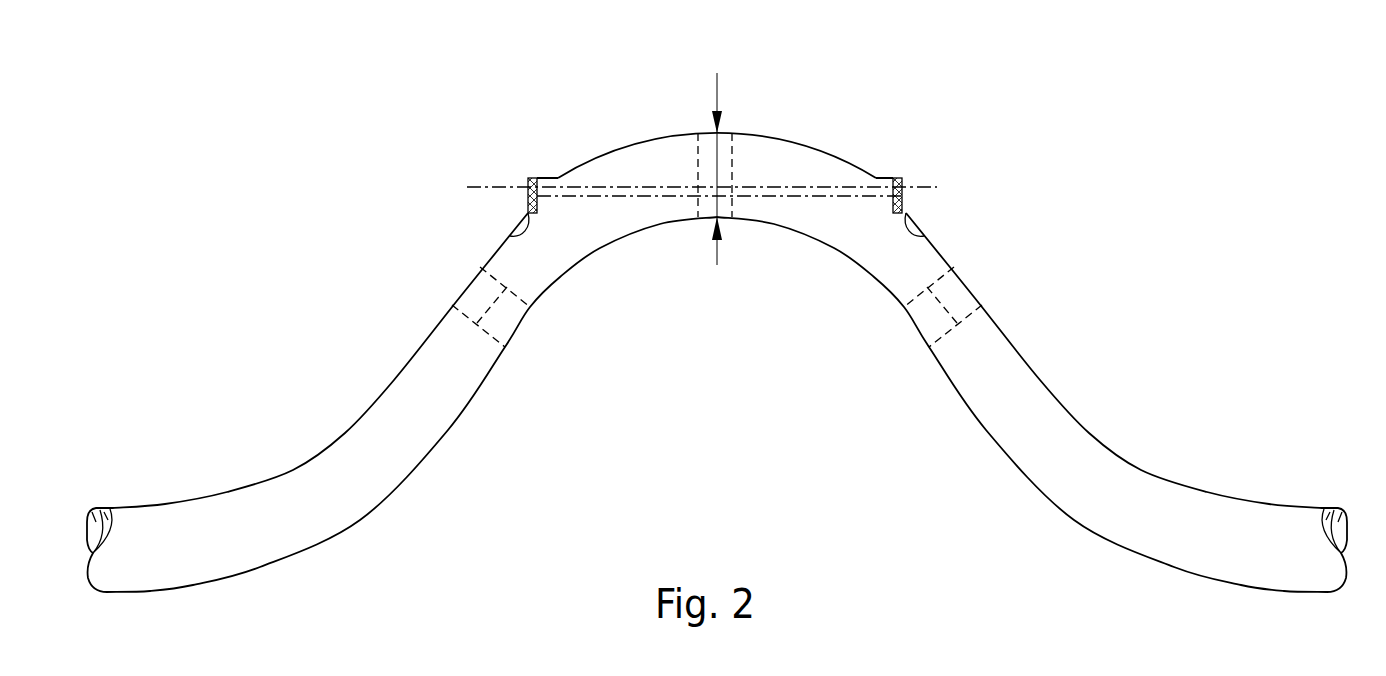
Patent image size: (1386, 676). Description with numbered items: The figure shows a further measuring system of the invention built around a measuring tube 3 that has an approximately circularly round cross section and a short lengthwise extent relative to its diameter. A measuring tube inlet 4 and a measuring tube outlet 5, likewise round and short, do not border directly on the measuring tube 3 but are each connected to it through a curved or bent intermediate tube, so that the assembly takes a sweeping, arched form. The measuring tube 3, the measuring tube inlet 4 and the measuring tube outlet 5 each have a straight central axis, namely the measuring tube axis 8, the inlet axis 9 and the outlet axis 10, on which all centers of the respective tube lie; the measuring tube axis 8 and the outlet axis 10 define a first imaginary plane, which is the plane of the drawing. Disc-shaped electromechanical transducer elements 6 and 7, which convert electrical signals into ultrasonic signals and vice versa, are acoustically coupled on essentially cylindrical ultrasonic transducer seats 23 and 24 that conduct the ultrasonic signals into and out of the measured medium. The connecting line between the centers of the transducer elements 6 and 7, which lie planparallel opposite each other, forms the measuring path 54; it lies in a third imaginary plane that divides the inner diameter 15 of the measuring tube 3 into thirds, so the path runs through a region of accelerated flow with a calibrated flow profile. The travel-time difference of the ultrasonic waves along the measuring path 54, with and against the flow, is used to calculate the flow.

The measuring tube 3 is at (720, 132).
The measuring tube inlet 4 is at (463, 283).
The measuring tube outlet 5 is at (972, 288).
The electromechanical transducer element 6 is at (532, 178).
The electromechanical transducer element 7 is at (898, 178).
The measuring tube axis 8 is at (480, 187).
The measuring tube inlet axis 9 is at (475, 332).
The measuring tube outlet axis 10 is at (953, 330).
The inner diameter 15 is at (717, 102).
The ultrasonic transducer seat 23 is at (513, 226).
The ultrasonic transducer seat 24 is at (921, 226).
The measuring path 54 is at (798, 198).